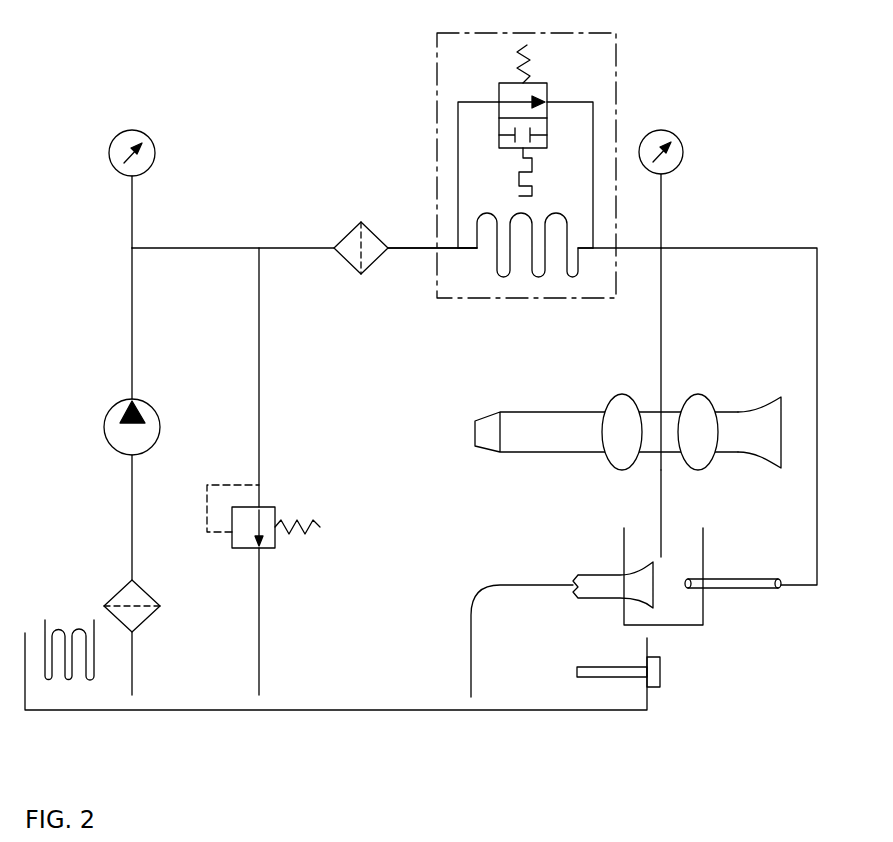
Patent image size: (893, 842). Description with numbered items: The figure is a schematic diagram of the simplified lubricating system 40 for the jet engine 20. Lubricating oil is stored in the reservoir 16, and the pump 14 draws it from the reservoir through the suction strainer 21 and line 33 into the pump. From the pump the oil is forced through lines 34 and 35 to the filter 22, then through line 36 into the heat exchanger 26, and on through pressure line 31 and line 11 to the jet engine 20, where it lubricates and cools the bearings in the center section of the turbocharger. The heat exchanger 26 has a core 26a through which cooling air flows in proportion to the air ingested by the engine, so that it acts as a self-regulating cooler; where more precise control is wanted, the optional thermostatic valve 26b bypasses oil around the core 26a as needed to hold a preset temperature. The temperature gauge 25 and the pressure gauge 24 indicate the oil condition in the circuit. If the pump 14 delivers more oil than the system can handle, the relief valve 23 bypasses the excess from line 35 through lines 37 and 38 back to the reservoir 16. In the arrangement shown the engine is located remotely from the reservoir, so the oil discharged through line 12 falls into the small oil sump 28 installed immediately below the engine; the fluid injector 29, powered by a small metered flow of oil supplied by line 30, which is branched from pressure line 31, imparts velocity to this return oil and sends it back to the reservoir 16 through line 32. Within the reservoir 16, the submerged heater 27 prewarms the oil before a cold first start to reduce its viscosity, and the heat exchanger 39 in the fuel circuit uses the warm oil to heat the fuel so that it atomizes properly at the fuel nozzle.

The line 11 is at (663, 303).
The line 12 is at (663, 521).
The pump 14 is at (108, 438).
The reservoir 16 is at (345, 711).
The jet engine 20 is at (615, 398).
The suction strainer 21 is at (140, 628).
The filter 22 is at (355, 225).
The relief valve 23 is at (272, 507).
The pressure gauge 24 is at (683, 140).
The temperature gauge 25 is at (150, 140).
The heat exchanger 26 is at (437, 36).
The core 26a is at (508, 275).
The thermostatic valve 26b is at (598, 70).
The submerged heater 27 is at (662, 687).
The oil sump 28 is at (704, 625).
The fluid injector 29 is at (750, 590).
The line 30 is at (817, 315).
The pressure line 31 is at (651, 255).
The line 32 is at (471, 615).
The line 33 is at (132, 500).
The line 34 is at (132, 286).
The line 35 is at (185, 248).
The line 36 is at (418, 250).
The line 37 is at (261, 371).
The line 38 is at (262, 632).
The heat exchanger 39 is at (50, 677).
The lubricating system 40 is at (410, 401).